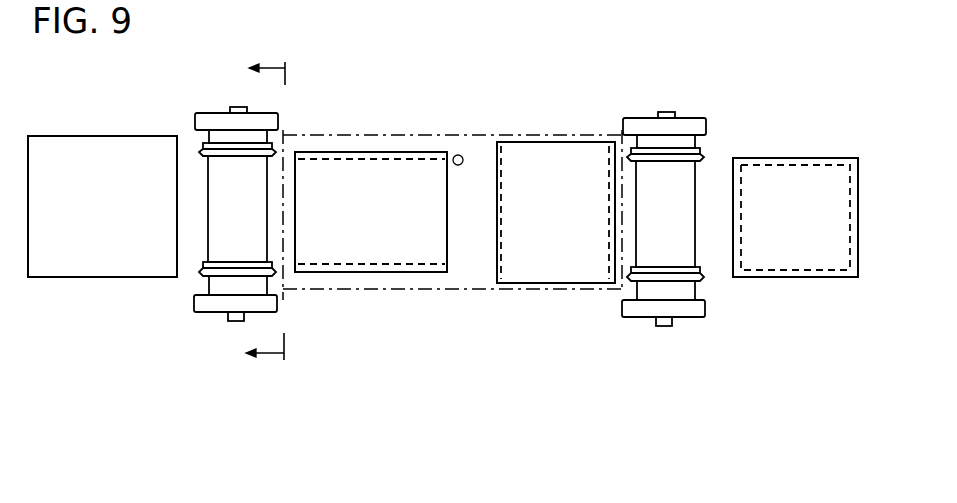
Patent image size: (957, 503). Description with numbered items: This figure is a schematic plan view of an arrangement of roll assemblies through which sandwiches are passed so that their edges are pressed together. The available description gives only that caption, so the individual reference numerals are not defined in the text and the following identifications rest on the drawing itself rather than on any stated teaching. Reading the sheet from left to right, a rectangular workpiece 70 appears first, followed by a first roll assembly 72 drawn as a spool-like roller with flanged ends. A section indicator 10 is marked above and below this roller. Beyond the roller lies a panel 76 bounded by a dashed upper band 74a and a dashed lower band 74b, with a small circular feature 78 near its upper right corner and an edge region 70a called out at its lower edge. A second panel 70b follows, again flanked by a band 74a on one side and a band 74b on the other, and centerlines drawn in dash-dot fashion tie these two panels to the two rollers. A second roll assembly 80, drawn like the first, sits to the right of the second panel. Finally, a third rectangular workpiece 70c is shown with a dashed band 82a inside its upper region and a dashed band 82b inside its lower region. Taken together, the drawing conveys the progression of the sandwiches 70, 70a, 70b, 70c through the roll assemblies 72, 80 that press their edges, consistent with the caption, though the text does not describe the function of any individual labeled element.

The section line 10- 10 is at (246, 207).
The substrate 70 is at (116, 131).
The substrate edge 70a is at (437, 278).
The substrate 70b is at (513, 284).
The substrate 70c is at (821, 282).
The roller 72 is at (220, 112).
The coating layer 74a is at (315, 156).
The coating layer 74b is at (372, 265).
The coated substrate 76 is at (347, 291).
The hole 78 is at (455, 156).
The roller 80 is at (643, 118).
The coating layer 82a is at (786, 161).
The coating layer 82b is at (746, 277).